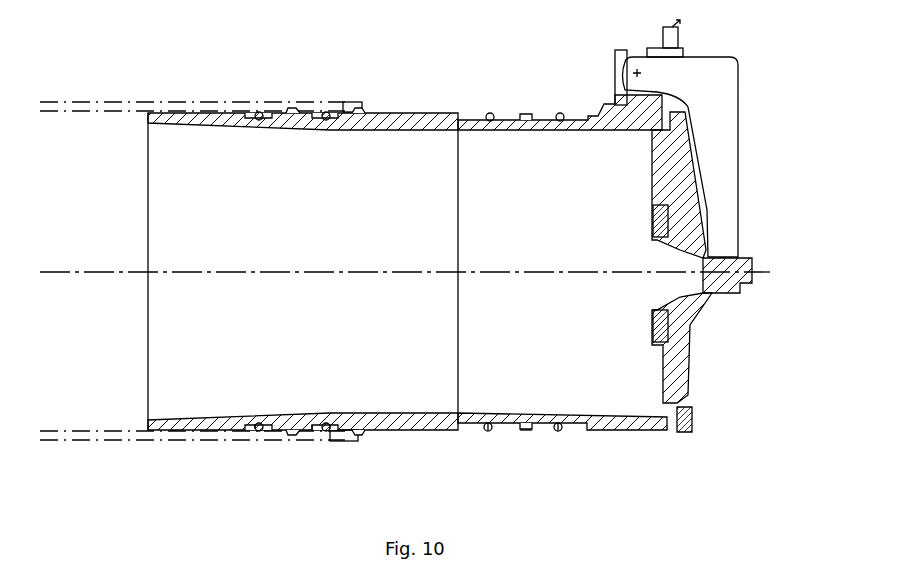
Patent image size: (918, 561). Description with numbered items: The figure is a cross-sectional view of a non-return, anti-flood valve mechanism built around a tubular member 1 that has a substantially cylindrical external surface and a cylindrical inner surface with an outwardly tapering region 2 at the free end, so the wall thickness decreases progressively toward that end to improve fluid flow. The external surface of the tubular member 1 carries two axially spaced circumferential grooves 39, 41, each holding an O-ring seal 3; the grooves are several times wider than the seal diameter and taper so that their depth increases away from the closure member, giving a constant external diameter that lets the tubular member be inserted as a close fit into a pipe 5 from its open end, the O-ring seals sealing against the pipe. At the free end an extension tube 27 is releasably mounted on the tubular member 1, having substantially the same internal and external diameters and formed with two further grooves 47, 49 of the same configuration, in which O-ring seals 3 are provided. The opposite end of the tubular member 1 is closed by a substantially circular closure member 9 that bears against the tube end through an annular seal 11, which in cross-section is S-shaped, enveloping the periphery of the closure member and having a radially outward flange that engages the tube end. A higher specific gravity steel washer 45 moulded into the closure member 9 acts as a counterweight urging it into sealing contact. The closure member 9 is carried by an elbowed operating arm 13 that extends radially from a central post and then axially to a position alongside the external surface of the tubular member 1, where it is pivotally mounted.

The tubular member 1 is at (520, 430).
The outwardly tapering region 2 is at (400, 120).
The O-ring seal 3 is at (255, 428).
The pipe 5 is at (100, 442).
The closure member 9 is at (695, 310).
The annular seal 11 is at (685, 434).
The operating arm 13 is at (721, 118).
The extension tube 27 is at (315, 428).
The circumferential groove 39 is at (572, 120).
The circumferential groove 41 is at (499, 120).
The washer 45 is at (668, 215).
The circumferential groove 47 is at (343, 120).
The circumferential groove 49 is at (243, 112).